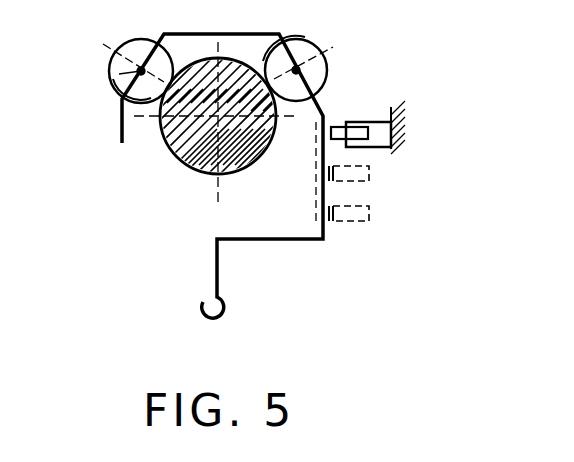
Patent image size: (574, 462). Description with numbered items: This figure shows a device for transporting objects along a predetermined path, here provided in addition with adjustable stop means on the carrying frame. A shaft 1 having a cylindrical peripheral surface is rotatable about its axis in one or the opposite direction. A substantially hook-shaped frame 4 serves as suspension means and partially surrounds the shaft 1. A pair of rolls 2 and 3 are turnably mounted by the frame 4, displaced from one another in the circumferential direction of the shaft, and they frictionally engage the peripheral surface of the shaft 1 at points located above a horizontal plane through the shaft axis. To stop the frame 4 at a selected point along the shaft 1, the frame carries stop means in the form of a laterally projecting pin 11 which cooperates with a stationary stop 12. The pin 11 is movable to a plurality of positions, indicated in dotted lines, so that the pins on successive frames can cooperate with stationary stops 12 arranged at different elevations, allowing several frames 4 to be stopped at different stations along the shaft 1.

The shaft 1 is at (187, 150).
The roll 2 is at (118, 76).
The roll 3 is at (300, 72).
The hook-shaped frame 4 is at (277, 242).
The laterally projecting pin 11 is at (352, 135).
The stationary stop 12 is at (380, 146).